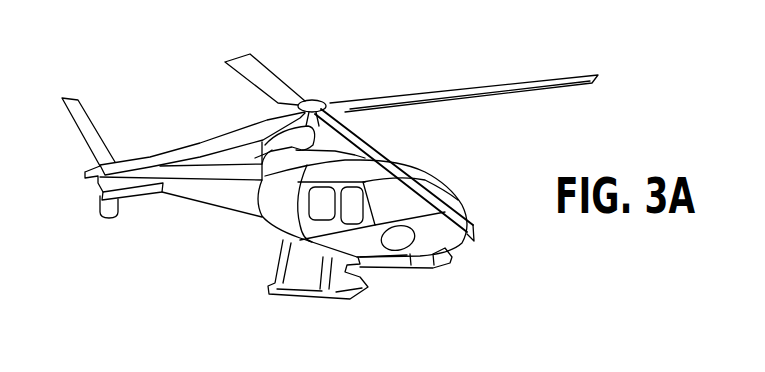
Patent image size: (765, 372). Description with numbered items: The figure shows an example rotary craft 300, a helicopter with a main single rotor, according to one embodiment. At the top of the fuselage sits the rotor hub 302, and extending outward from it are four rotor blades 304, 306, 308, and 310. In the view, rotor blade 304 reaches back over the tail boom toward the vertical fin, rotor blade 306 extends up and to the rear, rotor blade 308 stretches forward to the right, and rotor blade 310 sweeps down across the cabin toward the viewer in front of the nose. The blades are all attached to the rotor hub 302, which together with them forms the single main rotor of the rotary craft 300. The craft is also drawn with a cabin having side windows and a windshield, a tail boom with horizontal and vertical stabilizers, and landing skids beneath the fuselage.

The rotary craft 300 is at (146, 60).
The rotor hub 302 is at (322, 90).
The rotor blade 304 is at (198, 140).
The rotor blade 306 is at (267, 70).
The rotor blade 308 is at (470, 93).
The rotor blade 310 is at (388, 158).